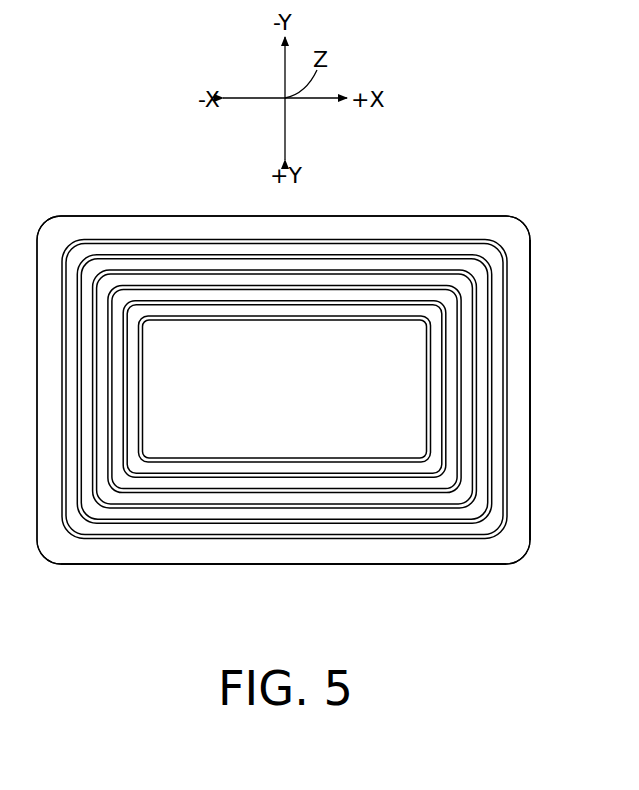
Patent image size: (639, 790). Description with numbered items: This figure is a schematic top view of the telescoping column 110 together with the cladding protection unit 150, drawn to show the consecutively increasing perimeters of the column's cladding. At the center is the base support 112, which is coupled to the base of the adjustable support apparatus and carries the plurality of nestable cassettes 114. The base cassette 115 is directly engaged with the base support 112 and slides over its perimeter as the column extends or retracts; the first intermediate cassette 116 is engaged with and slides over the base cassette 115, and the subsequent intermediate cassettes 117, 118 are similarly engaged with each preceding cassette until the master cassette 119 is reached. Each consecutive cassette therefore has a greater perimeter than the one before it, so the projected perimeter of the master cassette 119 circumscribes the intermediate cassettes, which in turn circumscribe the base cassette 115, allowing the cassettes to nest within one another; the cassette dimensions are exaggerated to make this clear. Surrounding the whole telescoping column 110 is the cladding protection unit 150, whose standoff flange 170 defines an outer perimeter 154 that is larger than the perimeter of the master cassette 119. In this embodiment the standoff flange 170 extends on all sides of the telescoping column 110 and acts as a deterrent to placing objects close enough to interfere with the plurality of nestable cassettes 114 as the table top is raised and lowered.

The telescoping column 110 is at (328, 351).
The base support 112 is at (193, 458).
The plurality of nestable cassettes 114 is at (410, 207).
The base cassette 115 is at (239, 478).
The first intermediate cassette 116 is at (287, 493).
The intermediate cassette 117 is at (332, 508).
The intermediate cassette 118 is at (378, 523).
The master cassette 119 is at (433, 538).
The cladding protection unit 150 is at (553, 290).
The outer perimeter 154 is at (530, 487).
The standoff flange 170 is at (112, 564).